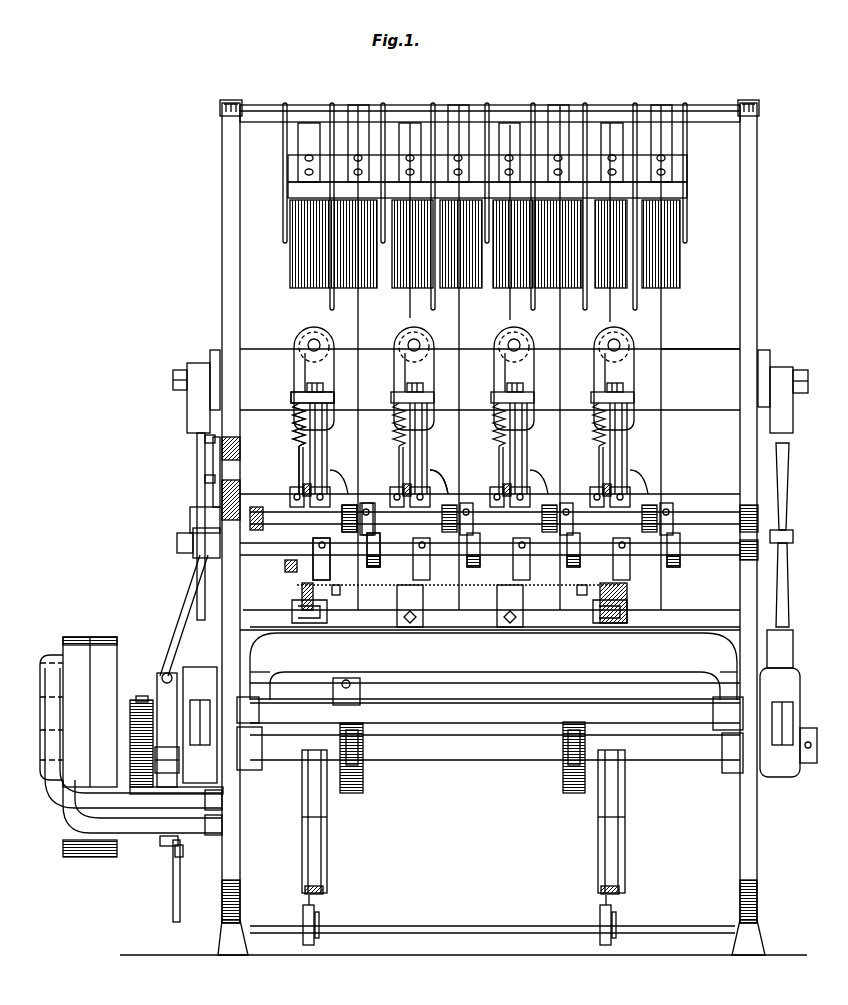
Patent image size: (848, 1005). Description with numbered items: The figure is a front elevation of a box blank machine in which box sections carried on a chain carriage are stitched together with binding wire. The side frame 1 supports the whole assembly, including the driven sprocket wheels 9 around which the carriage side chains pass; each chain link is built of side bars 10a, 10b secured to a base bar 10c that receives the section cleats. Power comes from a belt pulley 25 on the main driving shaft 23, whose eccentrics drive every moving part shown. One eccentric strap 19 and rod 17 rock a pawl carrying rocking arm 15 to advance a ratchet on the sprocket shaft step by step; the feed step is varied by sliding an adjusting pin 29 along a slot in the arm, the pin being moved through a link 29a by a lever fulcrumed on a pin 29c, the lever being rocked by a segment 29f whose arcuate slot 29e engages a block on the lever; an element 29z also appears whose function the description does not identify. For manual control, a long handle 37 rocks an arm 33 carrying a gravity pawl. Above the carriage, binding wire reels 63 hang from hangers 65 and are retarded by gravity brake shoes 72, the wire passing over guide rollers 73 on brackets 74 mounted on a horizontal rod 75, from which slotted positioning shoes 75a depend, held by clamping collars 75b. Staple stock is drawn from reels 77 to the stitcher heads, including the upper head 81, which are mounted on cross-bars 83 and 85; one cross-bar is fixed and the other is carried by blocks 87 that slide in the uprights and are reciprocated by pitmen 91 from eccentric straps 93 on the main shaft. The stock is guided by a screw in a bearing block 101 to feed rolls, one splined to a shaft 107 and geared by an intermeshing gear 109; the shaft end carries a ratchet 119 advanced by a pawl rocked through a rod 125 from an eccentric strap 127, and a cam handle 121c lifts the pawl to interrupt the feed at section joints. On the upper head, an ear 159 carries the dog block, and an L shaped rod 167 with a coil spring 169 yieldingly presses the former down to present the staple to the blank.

The frame 1 is at (228, 878).
The driven sprocket wheels 9 is at (302, 846).
The side bar 10a is at (300, 585).
The side bar 10b is at (318, 608).
The base bar 10c is at (302, 600).
The rocking arm 15 is at (173, 893).
The rod 17 is at (158, 863).
The eccentric strap 19 is at (138, 704).
The main driving shaft 23 is at (460, 752).
The belt pulley 25 is at (104, 640).
The adjusting pin 29 is at (162, 843).
The link 29a is at (205, 440).
The pin 29c is at (205, 480).
The arcuate slot 29e is at (220, 445).
The segment 29f is at (238, 436).
The lever arm 29z is at (228, 480).
The arm 33 is at (185, 612).
The long handle 37 is at (292, 582).
The reels 63 is at (290, 262).
The hangers 65 is at (286, 137).
The gravity brake shoes 72 is at (292, 190).
The guide rollers 73 is at (380, 588).
The brackets 74 is at (438, 588).
The horizontal rod 75 is at (697, 556).
The shoes 75a is at (380, 585).
The clamping collars 75b is at (372, 568).
The reels 77 is at (698, 265).
The upper head 81 is at (332, 345).
The cross-bar 83 is at (700, 510).
The cross-bar 85 is at (695, 356).
The blocks 87 is at (210, 358).
The pitmen 91 is at (197, 458).
The eccentric straps 93 is at (215, 690).
The bearing block 101 is at (372, 506).
The shaft 107 is at (484, 500).
The gear 109 is at (350, 500).
The ratchet 119 is at (192, 512).
The handle 121c is at (186, 535).
The rod 125 is at (183, 590).
The eccentric strap 127 is at (162, 672).
The ear 159 is at (290, 395).
The L shaped rod 167 is at (400, 460).
The coil spring 169 is at (398, 425).